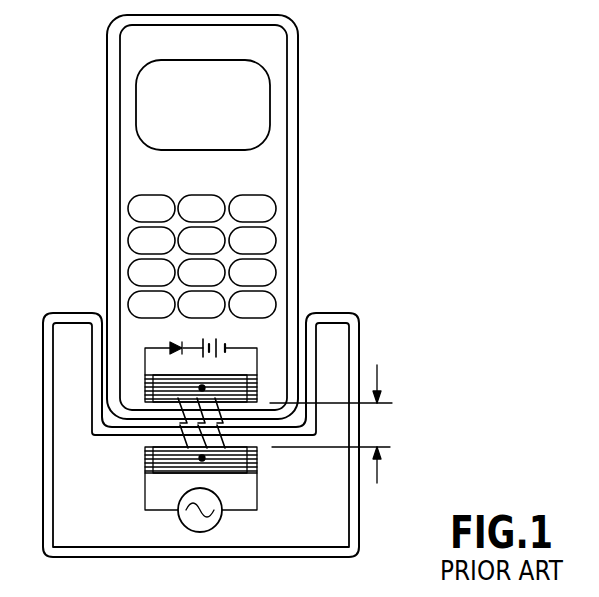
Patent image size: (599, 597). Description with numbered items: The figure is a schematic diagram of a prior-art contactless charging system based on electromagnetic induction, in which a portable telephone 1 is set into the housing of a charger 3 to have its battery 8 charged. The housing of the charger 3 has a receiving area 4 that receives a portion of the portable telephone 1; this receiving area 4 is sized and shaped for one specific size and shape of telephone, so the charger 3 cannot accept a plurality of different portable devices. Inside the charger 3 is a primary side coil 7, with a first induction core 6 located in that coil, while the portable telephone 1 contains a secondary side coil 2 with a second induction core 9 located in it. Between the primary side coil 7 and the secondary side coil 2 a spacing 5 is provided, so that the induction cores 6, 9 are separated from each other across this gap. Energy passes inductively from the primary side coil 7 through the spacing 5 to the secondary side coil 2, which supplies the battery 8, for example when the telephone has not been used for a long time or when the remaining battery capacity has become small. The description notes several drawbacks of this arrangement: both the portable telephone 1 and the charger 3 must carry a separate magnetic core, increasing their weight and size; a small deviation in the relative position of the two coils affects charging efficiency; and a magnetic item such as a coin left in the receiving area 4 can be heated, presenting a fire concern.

The portable telephone 1 is at (275, 55).
The secondary side coil 2 is at (313, 372).
The charger 3 is at (252, 390).
The receiving area 4 is at (108, 358).
The spacing 5 is at (379, 428).
The first induction core 6 is at (202, 458).
The primary side coil 7 is at (255, 452).
The battery 8 is at (217, 340).
The second induction core 9 is at (202, 388).